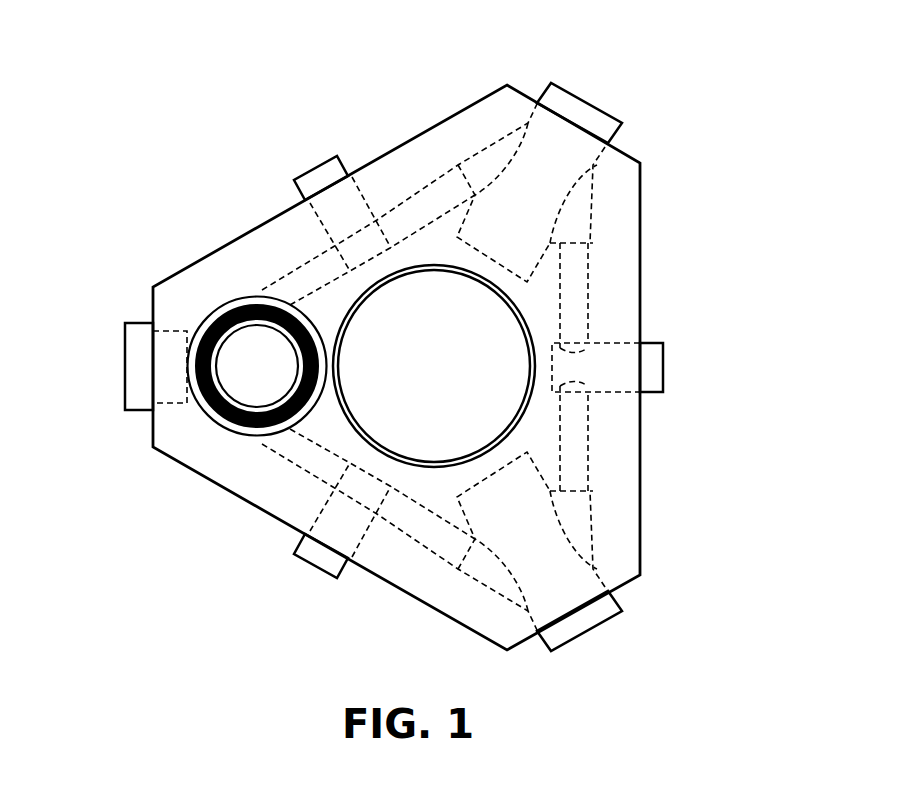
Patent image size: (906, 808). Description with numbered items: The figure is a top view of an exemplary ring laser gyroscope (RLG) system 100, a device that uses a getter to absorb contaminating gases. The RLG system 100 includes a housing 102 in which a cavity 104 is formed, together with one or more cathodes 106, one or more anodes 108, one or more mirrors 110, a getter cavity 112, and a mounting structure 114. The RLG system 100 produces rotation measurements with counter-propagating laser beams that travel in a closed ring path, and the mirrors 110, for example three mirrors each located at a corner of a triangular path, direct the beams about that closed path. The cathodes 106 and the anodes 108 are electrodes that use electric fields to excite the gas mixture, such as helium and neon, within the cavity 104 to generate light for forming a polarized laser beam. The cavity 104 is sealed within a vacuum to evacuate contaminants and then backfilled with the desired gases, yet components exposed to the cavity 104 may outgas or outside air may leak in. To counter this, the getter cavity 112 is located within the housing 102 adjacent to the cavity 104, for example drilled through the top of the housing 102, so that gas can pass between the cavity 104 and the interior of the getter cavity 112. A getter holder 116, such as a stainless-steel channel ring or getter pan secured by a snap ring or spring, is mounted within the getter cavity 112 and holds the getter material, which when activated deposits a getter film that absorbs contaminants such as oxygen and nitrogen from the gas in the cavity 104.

The ring laser gyroscope (RLG) system 100 is at (690, 96).
The housing 102 is at (642, 243).
The cavity 104 is at (588, 435).
The cathode 106 is at (663, 376).
The anode 108 is at (311, 172).
The mirror 110 is at (597, 102).
The getter cavity 112 is at (200, 322).
The mounting structure 114 is at (383, 407).
The getter holder 116 is at (277, 303).